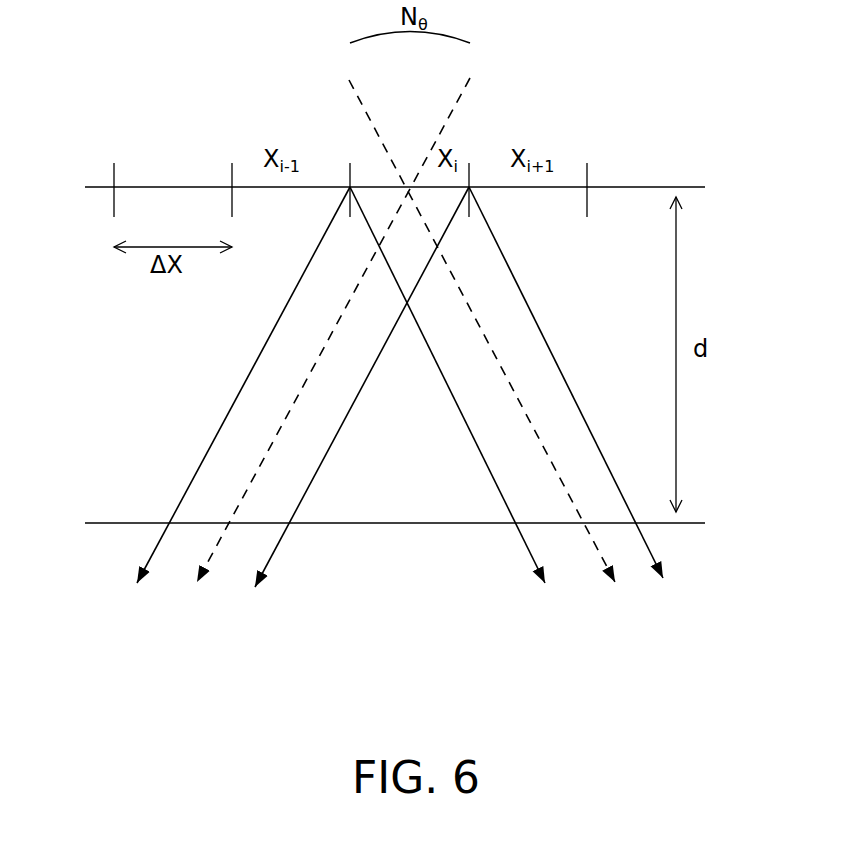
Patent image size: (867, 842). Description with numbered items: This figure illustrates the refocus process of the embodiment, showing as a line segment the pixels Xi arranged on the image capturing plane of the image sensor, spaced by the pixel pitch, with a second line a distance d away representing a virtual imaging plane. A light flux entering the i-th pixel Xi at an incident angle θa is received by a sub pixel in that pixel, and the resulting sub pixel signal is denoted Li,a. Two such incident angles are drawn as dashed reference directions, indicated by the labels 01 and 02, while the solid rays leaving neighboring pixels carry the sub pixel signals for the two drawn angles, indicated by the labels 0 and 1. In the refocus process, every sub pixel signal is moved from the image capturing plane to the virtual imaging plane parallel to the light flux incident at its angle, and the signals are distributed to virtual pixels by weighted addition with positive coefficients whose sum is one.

The light beam L_i,0 (first output direction) 0 is at (303, 402).
The light beam L_i,1 (second output direction) 1 is at (506, 402).
The reference direction theta_ 01 is at (340, 316).
The reference direction theta_ 02 is at (477, 316).